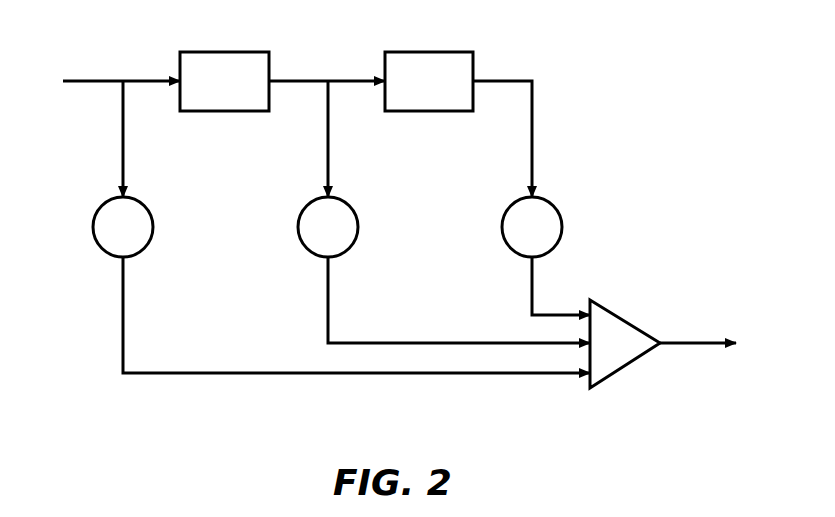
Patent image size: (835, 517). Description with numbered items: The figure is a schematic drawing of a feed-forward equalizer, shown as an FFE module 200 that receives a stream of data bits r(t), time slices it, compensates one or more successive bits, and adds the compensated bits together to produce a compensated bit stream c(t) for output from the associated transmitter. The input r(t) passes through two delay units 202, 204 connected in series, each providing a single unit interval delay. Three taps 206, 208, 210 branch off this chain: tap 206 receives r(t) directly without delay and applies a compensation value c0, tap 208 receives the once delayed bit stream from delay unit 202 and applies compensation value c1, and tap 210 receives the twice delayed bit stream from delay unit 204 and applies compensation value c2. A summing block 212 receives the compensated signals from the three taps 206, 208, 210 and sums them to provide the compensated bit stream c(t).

The FFE module 200 is at (78, 439).
The delay unit 202 is at (195, 52).
The delay unit 204 is at (400, 52).
The tap 206 is at (103, 205).
The tap 208 is at (308, 205).
The tap 210 is at (512, 205).
The summing block 212 is at (628, 322).